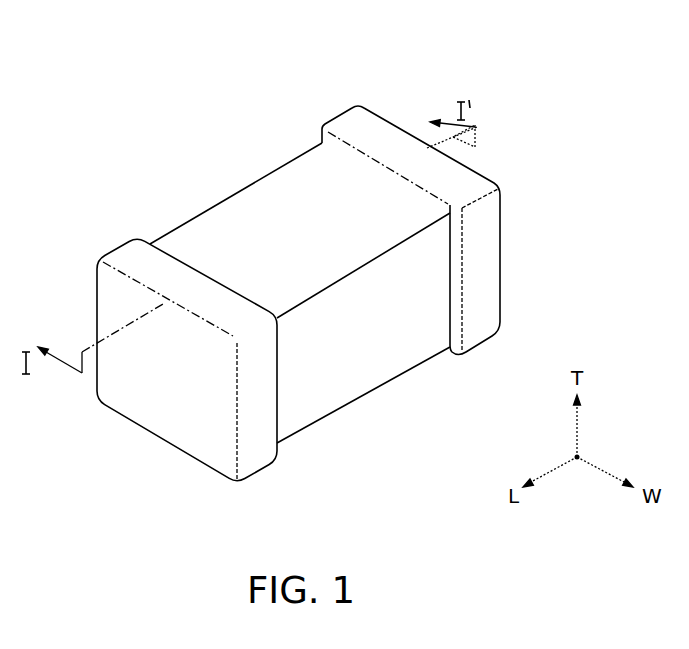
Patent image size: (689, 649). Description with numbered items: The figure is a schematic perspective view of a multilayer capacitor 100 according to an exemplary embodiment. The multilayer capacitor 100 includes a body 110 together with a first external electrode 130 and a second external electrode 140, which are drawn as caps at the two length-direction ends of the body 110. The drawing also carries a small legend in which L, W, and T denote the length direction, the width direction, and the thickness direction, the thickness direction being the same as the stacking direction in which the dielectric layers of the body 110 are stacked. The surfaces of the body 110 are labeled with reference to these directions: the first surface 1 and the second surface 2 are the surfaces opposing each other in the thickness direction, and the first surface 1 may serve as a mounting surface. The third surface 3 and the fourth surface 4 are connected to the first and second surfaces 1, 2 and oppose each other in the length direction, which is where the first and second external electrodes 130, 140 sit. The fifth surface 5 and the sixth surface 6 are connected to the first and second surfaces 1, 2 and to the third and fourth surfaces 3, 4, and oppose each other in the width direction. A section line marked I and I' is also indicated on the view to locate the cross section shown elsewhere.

The multilayer capacitor 100 is at (132, 63).
The body 110 is at (254, 200).
The first external electrode 130 is at (122, 241).
The second external electrode 140 is at (345, 123).
The first surface 1 is at (361, 404).
The second surface 2 is at (304, 206).
The third surface 3 is at (152, 405).
The fourth surface 4 is at (403, 123).
The fifth surface 5 is at (380, 347).
The sixth surface 6 is at (188, 217).